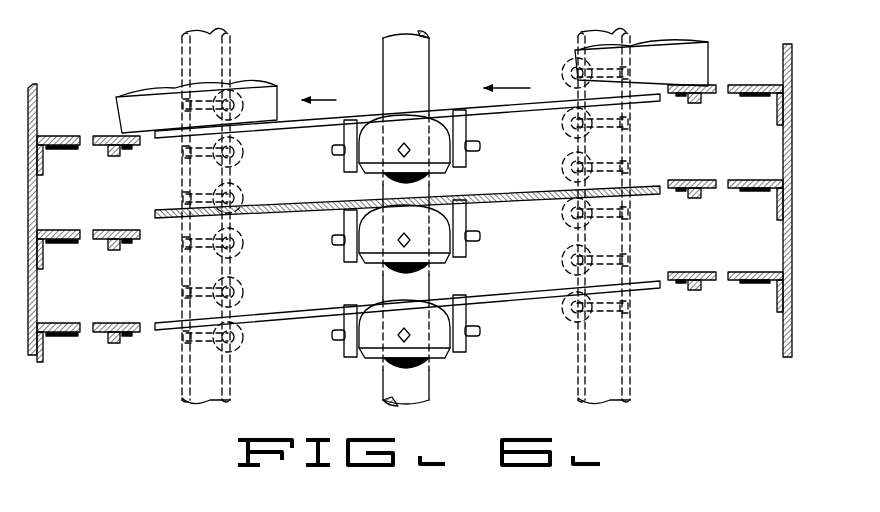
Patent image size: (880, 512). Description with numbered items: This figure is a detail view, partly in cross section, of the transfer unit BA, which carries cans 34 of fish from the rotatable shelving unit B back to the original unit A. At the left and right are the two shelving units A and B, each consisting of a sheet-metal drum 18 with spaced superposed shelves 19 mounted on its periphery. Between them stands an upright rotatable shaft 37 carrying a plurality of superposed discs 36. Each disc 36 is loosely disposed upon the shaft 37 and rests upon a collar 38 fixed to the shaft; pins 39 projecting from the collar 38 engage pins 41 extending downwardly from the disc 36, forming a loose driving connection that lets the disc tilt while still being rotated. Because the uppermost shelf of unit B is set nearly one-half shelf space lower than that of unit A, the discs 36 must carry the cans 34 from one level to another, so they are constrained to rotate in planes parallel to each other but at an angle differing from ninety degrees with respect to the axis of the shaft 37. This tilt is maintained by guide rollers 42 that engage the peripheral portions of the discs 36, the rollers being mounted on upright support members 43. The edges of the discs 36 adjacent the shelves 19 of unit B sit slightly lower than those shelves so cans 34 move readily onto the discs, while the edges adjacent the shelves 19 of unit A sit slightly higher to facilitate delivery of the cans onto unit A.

The drum 18 is at (38, 203).
The shelves 19 is at (100, 146).
The cans 34 is at (278, 88).
The discs 36 is at (440, 108).
The upright rotatable shaft 37 is at (390, 52).
The collar 38 is at (368, 166).
The pins 39 is at (332, 150).
The pins 41 is at (347, 158).
The guide rollers 42 is at (248, 186).
The upright support members 43 is at (228, 380).
The unit A is at (37, 87).
The unit B is at (781, 68).
The transfer unit BA is at (446, 62).